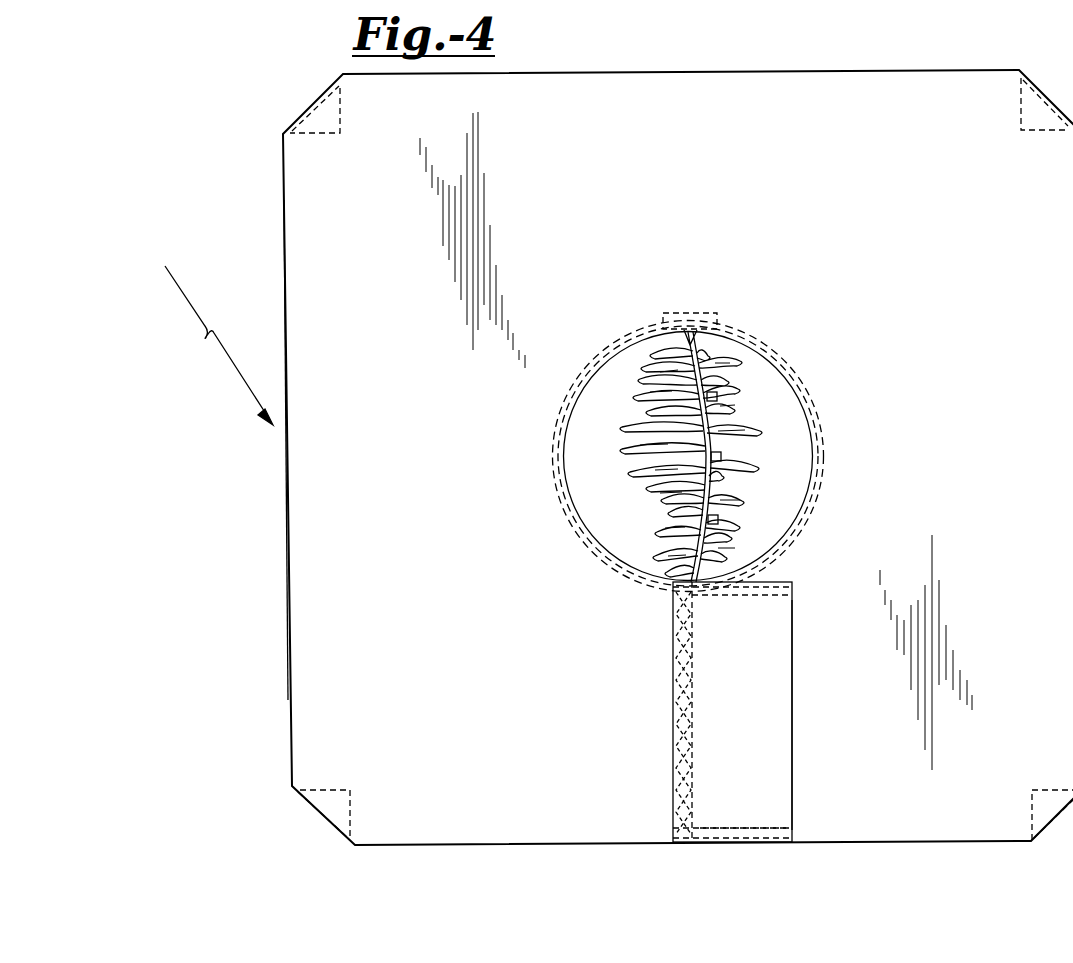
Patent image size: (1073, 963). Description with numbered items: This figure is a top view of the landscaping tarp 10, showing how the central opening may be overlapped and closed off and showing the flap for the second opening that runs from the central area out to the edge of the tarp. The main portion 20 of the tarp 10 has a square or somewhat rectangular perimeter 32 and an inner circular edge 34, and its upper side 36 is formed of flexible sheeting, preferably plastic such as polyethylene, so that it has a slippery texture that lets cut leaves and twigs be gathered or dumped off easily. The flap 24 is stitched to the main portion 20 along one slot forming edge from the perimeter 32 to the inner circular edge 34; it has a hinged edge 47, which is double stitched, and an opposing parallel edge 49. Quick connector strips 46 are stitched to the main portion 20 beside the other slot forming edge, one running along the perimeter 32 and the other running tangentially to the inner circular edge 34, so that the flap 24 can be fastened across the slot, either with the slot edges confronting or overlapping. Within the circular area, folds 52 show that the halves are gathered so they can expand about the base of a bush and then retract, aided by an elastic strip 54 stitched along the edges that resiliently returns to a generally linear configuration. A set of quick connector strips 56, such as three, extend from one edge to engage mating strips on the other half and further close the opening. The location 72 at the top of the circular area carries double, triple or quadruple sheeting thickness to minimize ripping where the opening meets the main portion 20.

The tarp 10 is at (210, 332).
The main portion 20 is at (278, 276).
The flap 24 is at (724, 676).
The perimeter 32 is at (287, 568).
The inner circular edge 34 is at (568, 497).
The upper side 36 is at (662, 172).
The quick connector strips 46 is at (753, 828).
The hinged edge 47 is at (673, 705).
The opposing parallel edge 49 is at (792, 715).
The folds 52 is at (624, 428).
The elastic strip 54 is at (672, 352).
The quick connector strips 56 is at (760, 503).
The reinforced location 72 is at (700, 313).